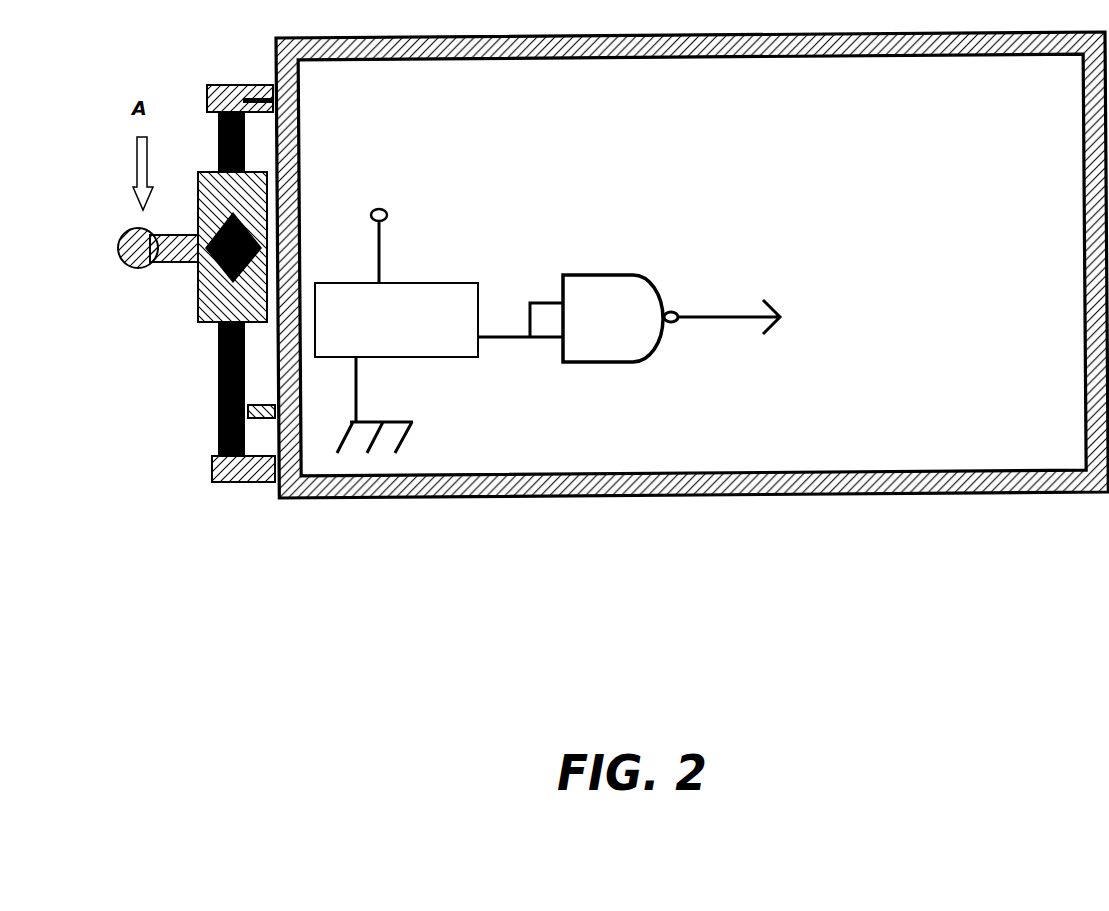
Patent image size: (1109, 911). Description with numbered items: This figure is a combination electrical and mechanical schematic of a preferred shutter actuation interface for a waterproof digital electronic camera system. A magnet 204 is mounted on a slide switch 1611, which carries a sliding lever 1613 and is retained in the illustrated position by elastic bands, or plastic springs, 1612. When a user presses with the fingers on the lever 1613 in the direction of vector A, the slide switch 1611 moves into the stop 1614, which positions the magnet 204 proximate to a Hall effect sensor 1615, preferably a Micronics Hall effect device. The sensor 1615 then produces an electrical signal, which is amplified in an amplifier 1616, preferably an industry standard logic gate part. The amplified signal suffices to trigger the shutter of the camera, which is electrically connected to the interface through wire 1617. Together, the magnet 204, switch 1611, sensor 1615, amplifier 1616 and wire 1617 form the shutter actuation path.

The slide switch 1611 is at (210, 203).
The magnet 204 is at (210, 262).
The sliding lever 1613 is at (145, 250).
The elastic bands, or plastic springs 1612 is at (218, 355).
The stop 1614 is at (267, 418).
The Hall effect sensor 1615 is at (413, 320).
The amplifier 1616 is at (630, 362).
The wire 1617 is at (700, 317).